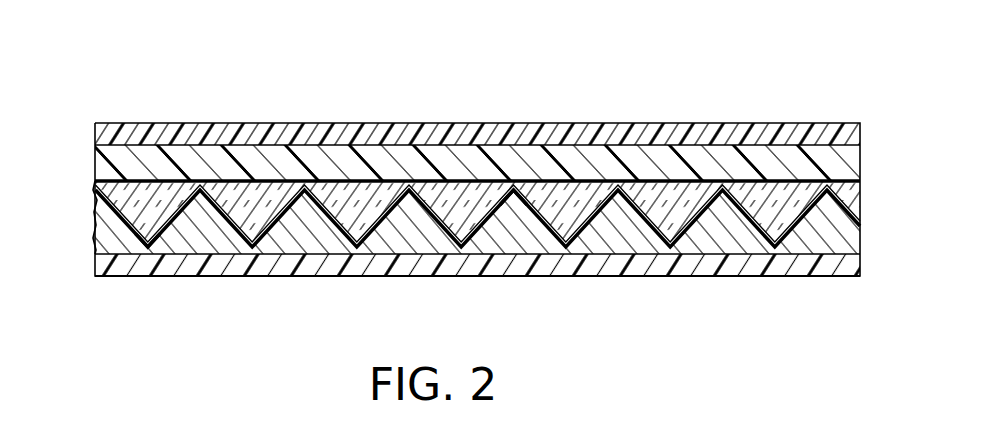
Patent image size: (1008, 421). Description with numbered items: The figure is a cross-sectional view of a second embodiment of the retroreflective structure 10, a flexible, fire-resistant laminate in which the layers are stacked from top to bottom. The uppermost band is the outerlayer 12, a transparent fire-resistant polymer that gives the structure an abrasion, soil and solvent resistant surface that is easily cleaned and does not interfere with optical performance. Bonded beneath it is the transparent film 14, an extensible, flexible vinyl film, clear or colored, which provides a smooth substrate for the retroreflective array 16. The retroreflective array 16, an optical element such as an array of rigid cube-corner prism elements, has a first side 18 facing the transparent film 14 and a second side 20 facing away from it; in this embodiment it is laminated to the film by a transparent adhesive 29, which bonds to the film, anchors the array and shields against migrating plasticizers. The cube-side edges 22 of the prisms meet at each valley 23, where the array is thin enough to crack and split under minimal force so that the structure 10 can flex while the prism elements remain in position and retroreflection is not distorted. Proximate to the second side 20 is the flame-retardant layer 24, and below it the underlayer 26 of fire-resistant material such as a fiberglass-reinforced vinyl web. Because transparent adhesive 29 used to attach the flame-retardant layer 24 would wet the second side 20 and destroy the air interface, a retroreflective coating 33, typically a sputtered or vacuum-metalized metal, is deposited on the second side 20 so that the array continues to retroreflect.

The retroreflective structure 10 is at (793, 79).
The outerlayer 12 is at (440, 123).
The transparent film 14 is at (350, 165).
The retroreflective array 16 is at (566, 189).
The first side 18 is at (717, 183).
The second side 20 is at (713, 225).
The cube-side edges 22 is at (643, 237).
The valley 23 is at (512, 203).
The flame-retardant layer 24 is at (430, 238).
The underlayer 26 is at (763, 276).
The transparent adhesive 29 is at (263, 181).
The retroreflective coating 33 is at (181, 221).